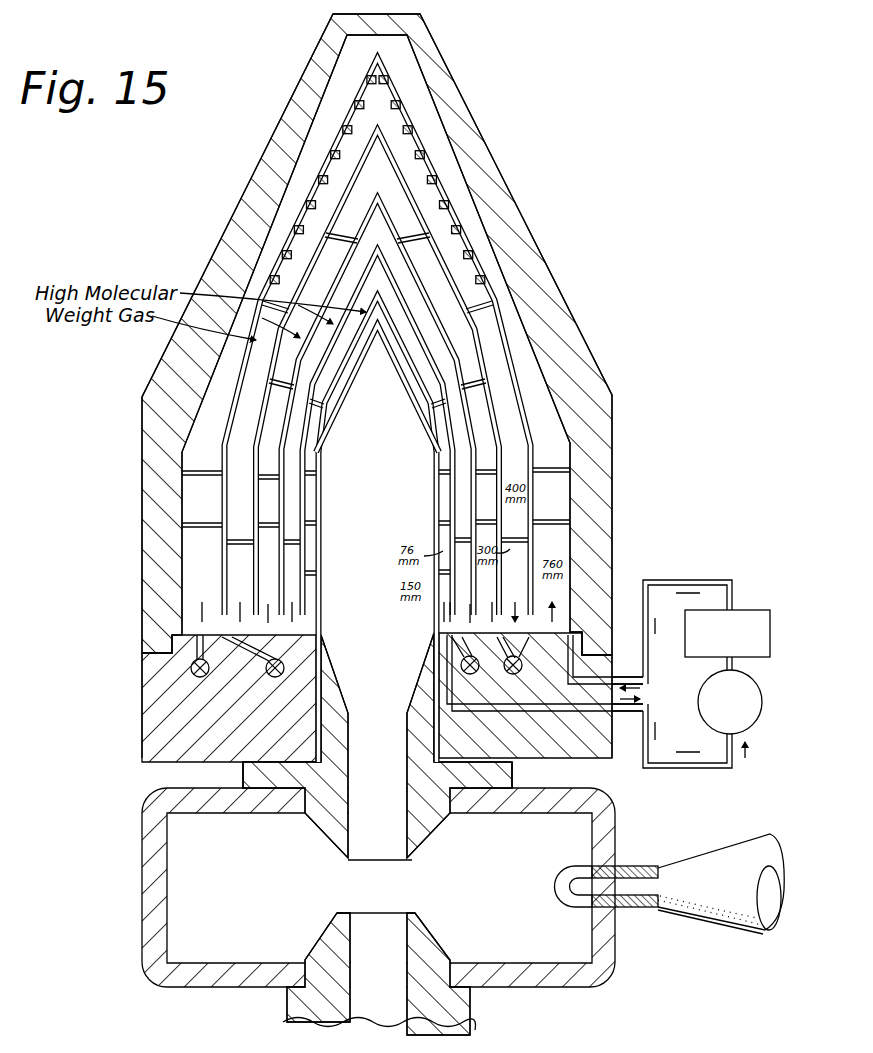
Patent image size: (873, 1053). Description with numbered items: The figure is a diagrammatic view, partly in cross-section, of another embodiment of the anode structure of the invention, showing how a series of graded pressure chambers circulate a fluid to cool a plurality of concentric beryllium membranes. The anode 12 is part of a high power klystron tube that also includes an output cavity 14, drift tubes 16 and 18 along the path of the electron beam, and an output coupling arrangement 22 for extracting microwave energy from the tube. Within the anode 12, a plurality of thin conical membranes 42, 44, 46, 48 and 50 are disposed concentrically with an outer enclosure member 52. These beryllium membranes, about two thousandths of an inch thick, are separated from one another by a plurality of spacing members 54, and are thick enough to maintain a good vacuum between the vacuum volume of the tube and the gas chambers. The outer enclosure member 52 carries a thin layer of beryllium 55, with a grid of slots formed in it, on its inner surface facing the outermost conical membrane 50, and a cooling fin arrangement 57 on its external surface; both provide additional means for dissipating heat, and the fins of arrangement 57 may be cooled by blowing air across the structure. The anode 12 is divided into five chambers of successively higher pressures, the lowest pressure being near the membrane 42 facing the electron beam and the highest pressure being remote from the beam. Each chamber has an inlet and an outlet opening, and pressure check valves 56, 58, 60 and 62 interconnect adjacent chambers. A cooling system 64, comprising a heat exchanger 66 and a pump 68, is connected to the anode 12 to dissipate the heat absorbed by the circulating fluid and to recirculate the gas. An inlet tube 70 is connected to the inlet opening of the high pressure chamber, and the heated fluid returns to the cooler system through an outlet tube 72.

The anode 12 is at (553, 160).
The output cavity 14 is at (575, 822).
The drift tube 16 is at (415, 950).
The drift tube 18 is at (364, 858).
The output coupling arrangement 22 is at (740, 855).
The conical membrane 42 is at (400, 366).
The conical membrane 44 is at (425, 396).
The conical membrane 46 is at (447, 408).
The conical membrane 48 is at (477, 404).
The outermost conical membrane 50 is at (503, 413).
The outer enclosure member 52 is at (480, 218).
The spacing members 54 is at (477, 474).
The thin layer of beryllium 55 is at (328, 175).
The pressure check valve 56 is at (173, 693).
The cooling fin arrangement 57 is at (440, 72).
The pressure check valve 58 is at (522, 672).
The pressure check valve 60 is at (287, 662).
The pressure check valve 62 is at (476, 678).
The cooling system 64 is at (707, 577).
The heat exchanger 66 is at (742, 612).
The pump 68 is at (758, 697).
The inlet tube 70 is at (633, 672).
The outlet tube 72 is at (629, 718).